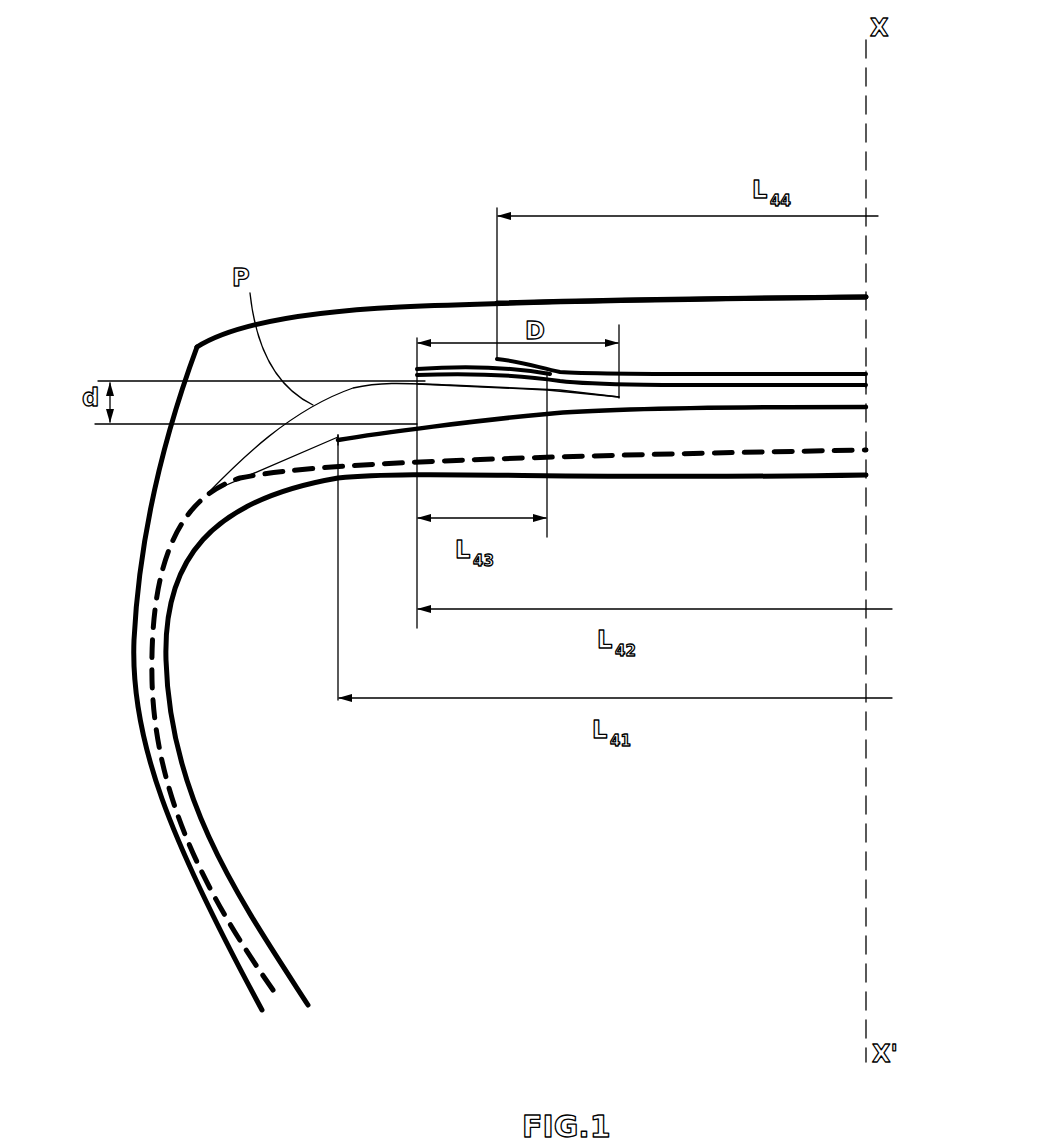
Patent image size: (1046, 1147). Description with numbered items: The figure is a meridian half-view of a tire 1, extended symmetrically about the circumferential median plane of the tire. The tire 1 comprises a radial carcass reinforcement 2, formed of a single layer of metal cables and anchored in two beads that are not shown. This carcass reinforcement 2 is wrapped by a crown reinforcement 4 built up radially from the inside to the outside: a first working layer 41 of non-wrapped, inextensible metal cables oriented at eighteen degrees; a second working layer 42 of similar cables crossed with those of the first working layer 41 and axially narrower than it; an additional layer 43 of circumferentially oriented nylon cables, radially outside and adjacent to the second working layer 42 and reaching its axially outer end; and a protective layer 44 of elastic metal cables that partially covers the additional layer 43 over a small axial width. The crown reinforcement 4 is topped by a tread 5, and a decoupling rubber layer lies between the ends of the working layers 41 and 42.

The tire 1 is at (93, 300).
The radial carcass reinforcement 2 is at (163, 590).
The crown reinforcement 4 is at (890, 395).
The tread 5 is at (760, 313).
The first working layer 41 is at (810, 412).
The second working layer 42 is at (755, 387).
The additional layer 43 is at (430, 368).
The protective layer 44 is at (823, 371).